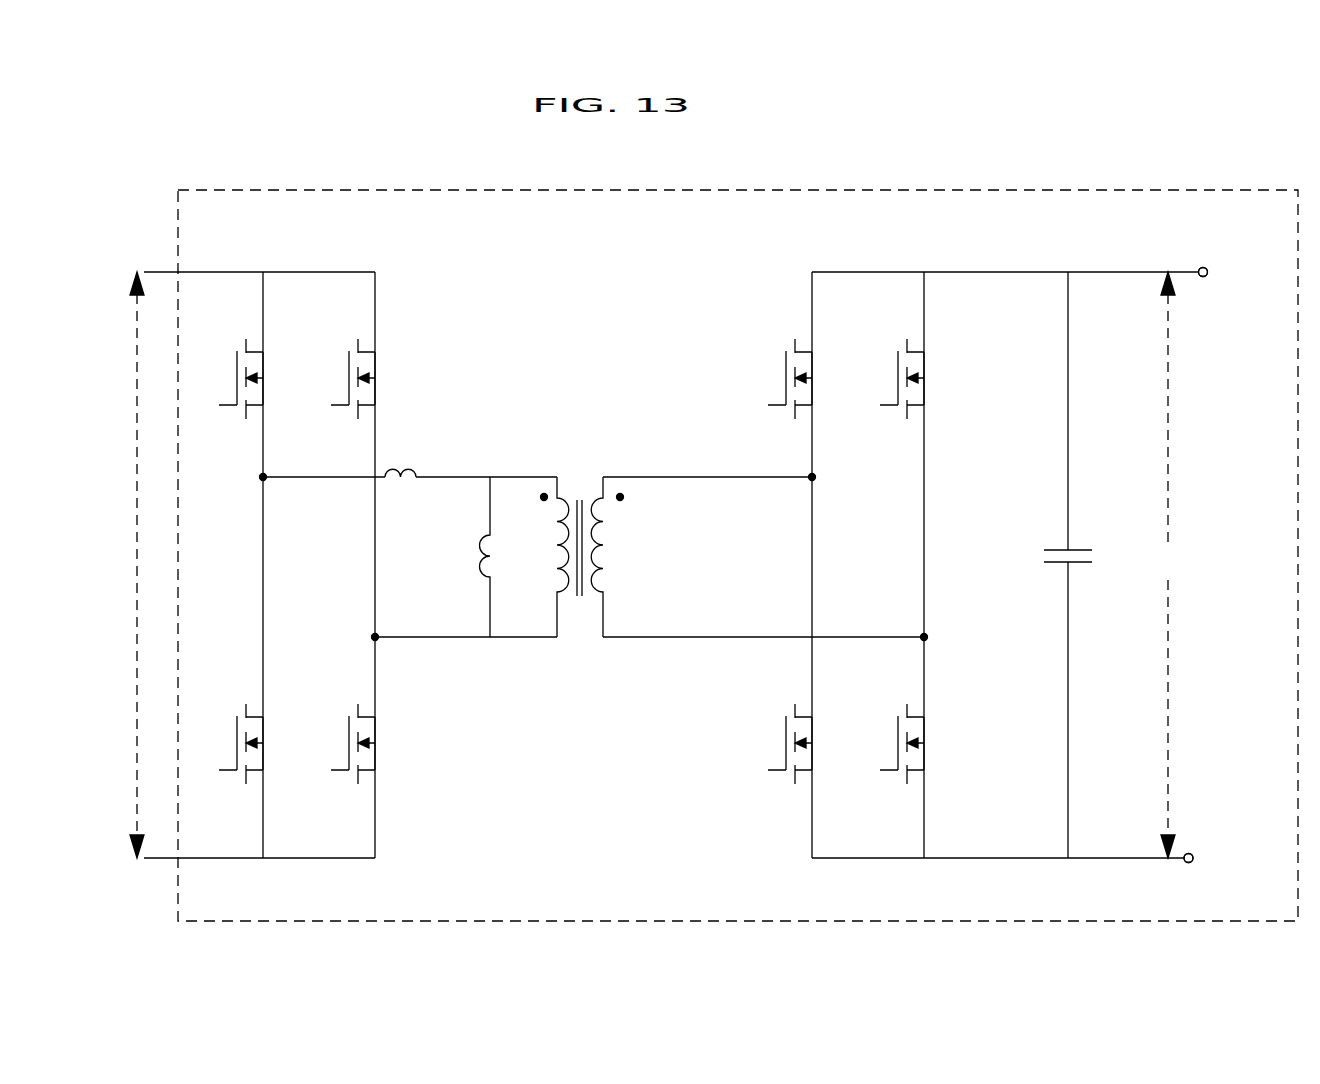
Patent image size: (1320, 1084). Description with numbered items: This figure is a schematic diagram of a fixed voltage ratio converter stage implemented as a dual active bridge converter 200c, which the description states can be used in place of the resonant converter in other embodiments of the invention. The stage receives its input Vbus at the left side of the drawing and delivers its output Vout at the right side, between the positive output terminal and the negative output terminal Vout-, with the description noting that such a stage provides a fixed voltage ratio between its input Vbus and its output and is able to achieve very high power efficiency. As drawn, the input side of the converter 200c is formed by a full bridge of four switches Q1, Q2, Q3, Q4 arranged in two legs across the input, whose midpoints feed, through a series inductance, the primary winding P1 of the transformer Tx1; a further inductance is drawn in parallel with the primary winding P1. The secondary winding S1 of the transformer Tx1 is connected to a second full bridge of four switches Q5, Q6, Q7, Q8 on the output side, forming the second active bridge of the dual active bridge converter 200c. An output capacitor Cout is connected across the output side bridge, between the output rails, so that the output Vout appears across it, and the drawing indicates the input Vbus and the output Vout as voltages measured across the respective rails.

The dual active bridge converter 200c is at (762, 910).
The primary-side switch Q1 is at (256, 379).
The primary-side switch Q2 is at (256, 744).
The primary-side switch Q3 is at (368, 379).
The primary-side switch Q4 is at (368, 744).
The secondary-side switch Q5 is at (805, 379).
The secondary-side switch Q6 is at (805, 744).
The secondary-side switch Q7 is at (917, 379).
The secondary-side switch Q8 is at (917, 744).
The transformer Tx1 is at (581, 540).
The transformer primary winding P1 is at (548, 557).
The transformer secondary winding S1 is at (613, 557).
The output capacitor Cout is at (1086, 565).
The input Vbus is at (125, 565).
The output voltage Vout is at (1168, 565).
The negative output terminal Vout- is at (1227, 844).